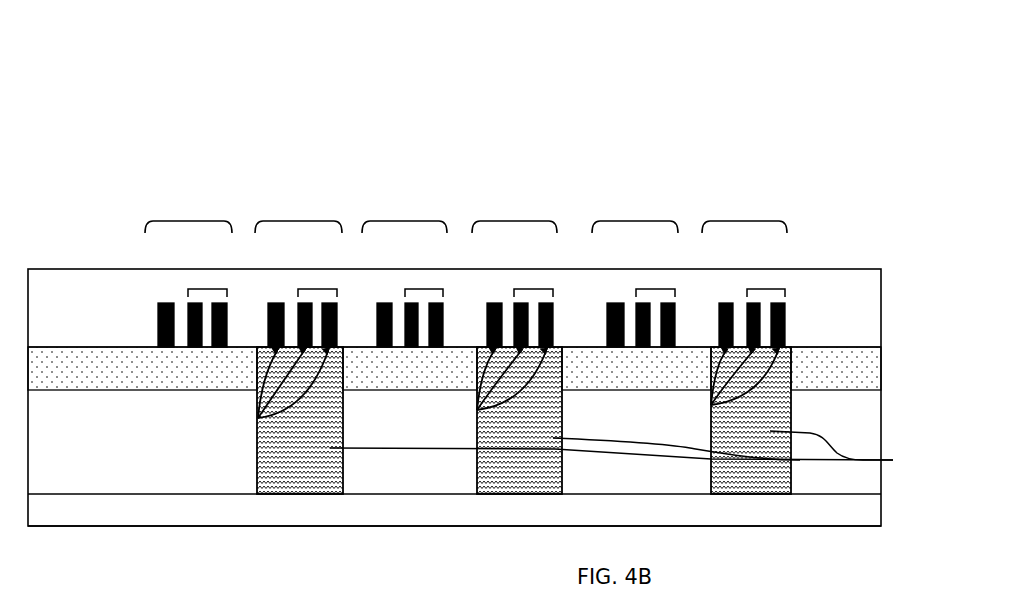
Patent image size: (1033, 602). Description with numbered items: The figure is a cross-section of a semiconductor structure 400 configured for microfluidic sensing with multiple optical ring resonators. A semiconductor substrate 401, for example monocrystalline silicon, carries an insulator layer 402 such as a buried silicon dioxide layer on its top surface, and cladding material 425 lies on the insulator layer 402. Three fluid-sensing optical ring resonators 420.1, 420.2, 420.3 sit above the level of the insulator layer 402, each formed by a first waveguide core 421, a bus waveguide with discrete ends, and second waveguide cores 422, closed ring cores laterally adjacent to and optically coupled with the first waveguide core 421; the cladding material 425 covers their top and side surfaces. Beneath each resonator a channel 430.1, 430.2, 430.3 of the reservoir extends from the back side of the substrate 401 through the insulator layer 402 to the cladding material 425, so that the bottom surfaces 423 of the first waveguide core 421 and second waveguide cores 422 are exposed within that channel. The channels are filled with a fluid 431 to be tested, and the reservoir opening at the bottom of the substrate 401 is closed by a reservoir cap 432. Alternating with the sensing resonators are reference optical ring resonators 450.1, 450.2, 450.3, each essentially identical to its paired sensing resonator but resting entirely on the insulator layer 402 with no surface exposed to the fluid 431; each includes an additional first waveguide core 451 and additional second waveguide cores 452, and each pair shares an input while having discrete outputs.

The semiconductor structure 400 is at (860, 100).
The semiconductor substrate 401 is at (881, 482).
The insulator layer 402 is at (881, 369).
The cladding material 425 is at (881, 299).
The fluid 431 is at (631, 451).
The reservoir cap 432 is at (881, 517).
The channel 430.1 is at (711, 487).
The channel 430.2 is at (477, 483).
The channel 430.3 is at (257, 470).
The fluid-sensing optical ring resonator 420.1 is at (745, 221).
The fluid-sensing optical ring resonator 420.2 is at (515, 221).
The fluid-sensing optical ring resonator 420.3 is at (298, 221).
The reference optical ring resonator 450.1 is at (635, 221).
The reference optical ring resonator 450.2 is at (405, 221).
The reference optical ring resonator 450.3 is at (190, 221).
The first waveguide core 421 is at (276, 303).
The second waveguide core 422 is at (318, 289).
The bottom surface 423 is at (258, 416).
The additional first waveguide core 451 is at (166, 303).
The additional second waveguide core 452 is at (207, 289).